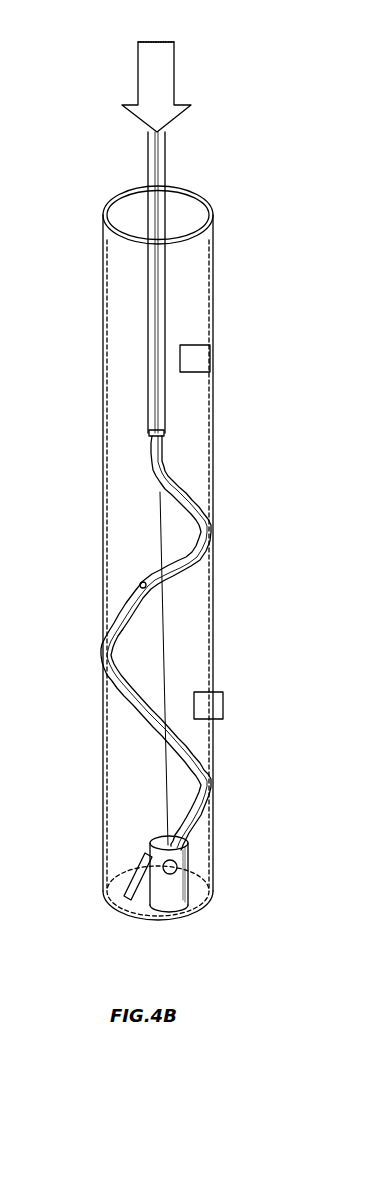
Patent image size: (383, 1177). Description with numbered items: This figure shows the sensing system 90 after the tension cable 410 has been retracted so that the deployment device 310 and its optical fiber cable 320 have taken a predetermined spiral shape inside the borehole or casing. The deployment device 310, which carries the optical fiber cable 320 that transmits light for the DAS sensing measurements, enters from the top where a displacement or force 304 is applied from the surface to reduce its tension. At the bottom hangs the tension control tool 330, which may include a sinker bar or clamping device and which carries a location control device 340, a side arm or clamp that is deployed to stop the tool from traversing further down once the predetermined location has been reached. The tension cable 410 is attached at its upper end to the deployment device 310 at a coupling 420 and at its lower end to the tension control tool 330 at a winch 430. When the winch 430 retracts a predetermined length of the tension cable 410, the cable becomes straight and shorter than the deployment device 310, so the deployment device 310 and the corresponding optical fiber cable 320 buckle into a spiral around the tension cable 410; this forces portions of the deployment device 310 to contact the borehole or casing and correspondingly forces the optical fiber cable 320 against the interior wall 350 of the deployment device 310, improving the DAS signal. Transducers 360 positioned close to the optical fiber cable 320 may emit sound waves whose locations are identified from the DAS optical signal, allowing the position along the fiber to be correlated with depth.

The sensing system 90 is at (141, 373).
The displacement or force 304 is at (137, 73).
The deployment device 310 is at (148, 172).
The optical fiber cable 320 is at (193, 497).
The tension control tool 330 is at (150, 850).
The location control device 340 is at (128, 886).
The interior wall 350 is at (141, 583).
The transducer 360 is at (210, 357).
The tension cable 410 is at (167, 648).
The coupling 420 is at (149, 433).
The winch 430 is at (177, 866).